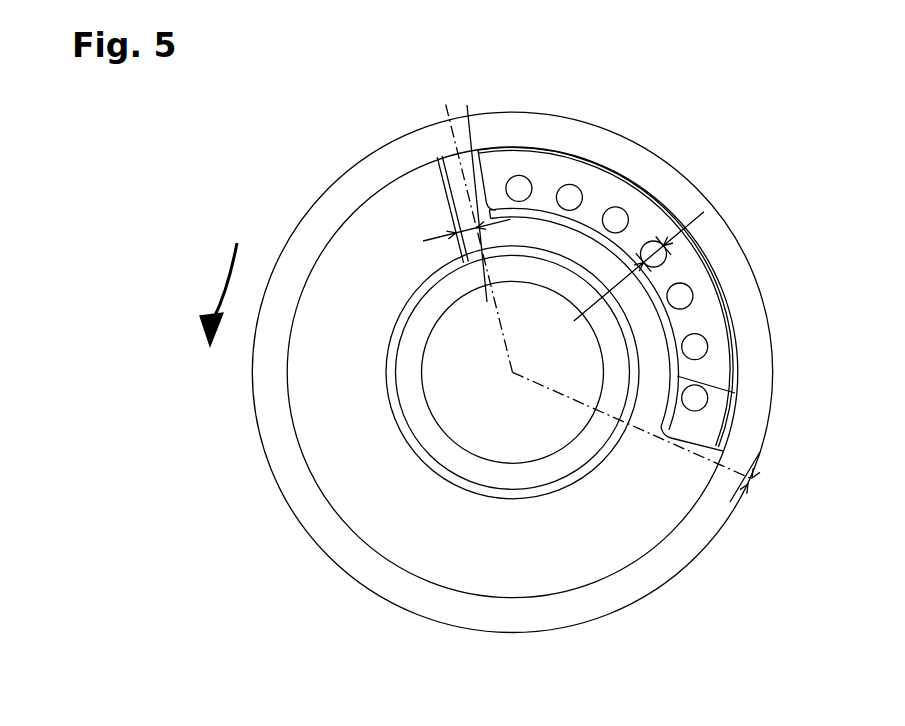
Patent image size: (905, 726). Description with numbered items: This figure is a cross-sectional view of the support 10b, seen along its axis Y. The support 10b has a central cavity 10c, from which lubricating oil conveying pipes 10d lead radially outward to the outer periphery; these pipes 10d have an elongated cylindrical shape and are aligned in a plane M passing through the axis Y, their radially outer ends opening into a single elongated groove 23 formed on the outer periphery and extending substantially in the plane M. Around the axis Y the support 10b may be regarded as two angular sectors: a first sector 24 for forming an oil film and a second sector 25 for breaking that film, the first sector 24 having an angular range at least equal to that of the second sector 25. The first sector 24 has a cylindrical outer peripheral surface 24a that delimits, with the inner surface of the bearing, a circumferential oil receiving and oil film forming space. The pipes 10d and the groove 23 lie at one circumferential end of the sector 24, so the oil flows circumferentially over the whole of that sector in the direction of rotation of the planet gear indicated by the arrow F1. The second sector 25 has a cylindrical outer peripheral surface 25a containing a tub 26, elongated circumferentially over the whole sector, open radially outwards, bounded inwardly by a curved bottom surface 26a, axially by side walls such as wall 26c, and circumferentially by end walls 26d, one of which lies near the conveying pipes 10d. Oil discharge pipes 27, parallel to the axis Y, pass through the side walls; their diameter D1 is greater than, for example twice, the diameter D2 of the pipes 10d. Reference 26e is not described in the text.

The support 10b is at (774, 167).
The cavity 10c is at (513, 372).
The lubricating oil conveying pipes 10d is at (441, 178).
The groove 23 is at (468, 117).
The first sector 24 is at (282, 499).
The outer peripheral surface 24a is at (286, 404).
The second sector 25 is at (702, 193).
The outer peripheral surface 25a is at (732, 418).
The tub 26 is at (739, 367).
The bottom surface 26a is at (715, 227).
The side wall 26c is at (607, 190).
The circumferential end walls 26d is at (487, 180).
The outer band portion 26e is at (712, 258).
The oil discharge pipes 27 is at (569, 197).
The diameter of the discharge pipes D1 is at (722, 224).
The diameter of the conveying pipes D2 is at (423, 241).
The plane M is at (476, 273).
The axis Y is at (512, 373).
The arrow indicating direction of rotation F1 is at (222, 283).